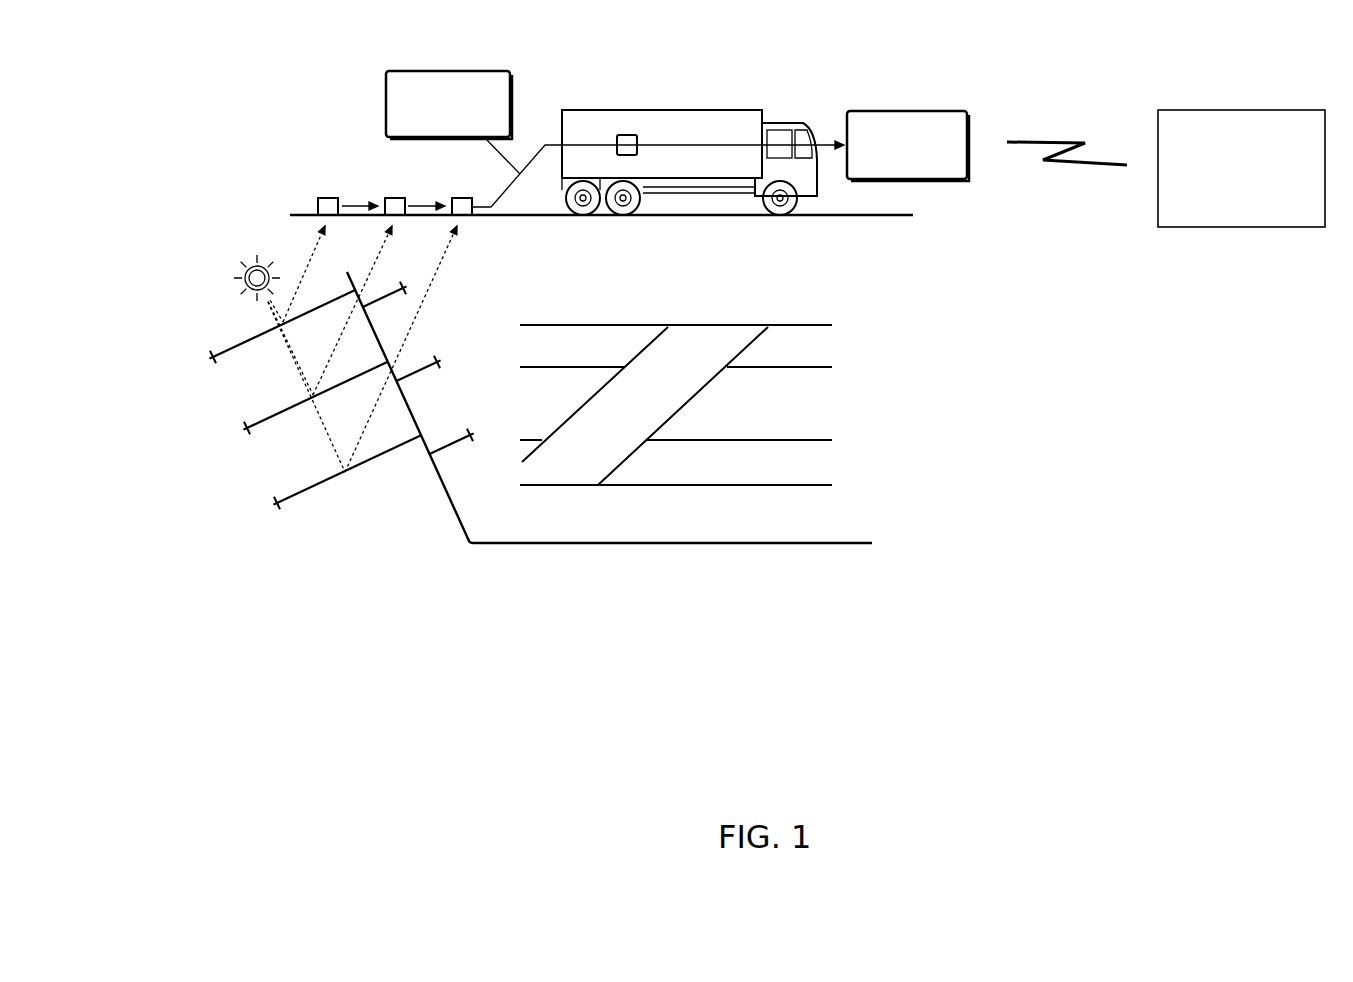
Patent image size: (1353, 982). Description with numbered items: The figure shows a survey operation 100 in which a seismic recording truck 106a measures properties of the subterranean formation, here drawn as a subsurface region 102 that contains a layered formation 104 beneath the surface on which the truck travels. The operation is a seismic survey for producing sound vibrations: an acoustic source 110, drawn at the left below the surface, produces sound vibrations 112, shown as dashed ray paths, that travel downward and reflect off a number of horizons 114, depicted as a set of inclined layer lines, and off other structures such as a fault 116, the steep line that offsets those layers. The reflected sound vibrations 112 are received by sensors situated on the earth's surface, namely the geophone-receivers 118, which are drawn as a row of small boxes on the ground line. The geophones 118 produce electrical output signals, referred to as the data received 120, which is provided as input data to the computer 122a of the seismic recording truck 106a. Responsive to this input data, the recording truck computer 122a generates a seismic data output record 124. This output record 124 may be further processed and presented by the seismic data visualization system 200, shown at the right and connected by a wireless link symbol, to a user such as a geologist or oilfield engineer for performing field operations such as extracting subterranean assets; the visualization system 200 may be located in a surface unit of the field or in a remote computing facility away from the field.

The seismic data acquisition system 100 is at (890, 57).
The subsurface region 102 is at (802, 303).
The subsurface formation 104 is at (790, 415).
The seismic recording truck 106a is at (735, 110).
The acoustic source 110 is at (250, 260).
The sound vibrations 112 is at (272, 310).
The horizons 114 is at (443, 446).
The fault 116 is at (442, 487).
The geophone-receivers 118 is at (457, 197).
The data received 120 is at (440, 70).
The computer 122a is at (630, 135).
The seismic data output record 124 is at (933, 110).
The seismic data visualization system 200 is at (1226, 213).